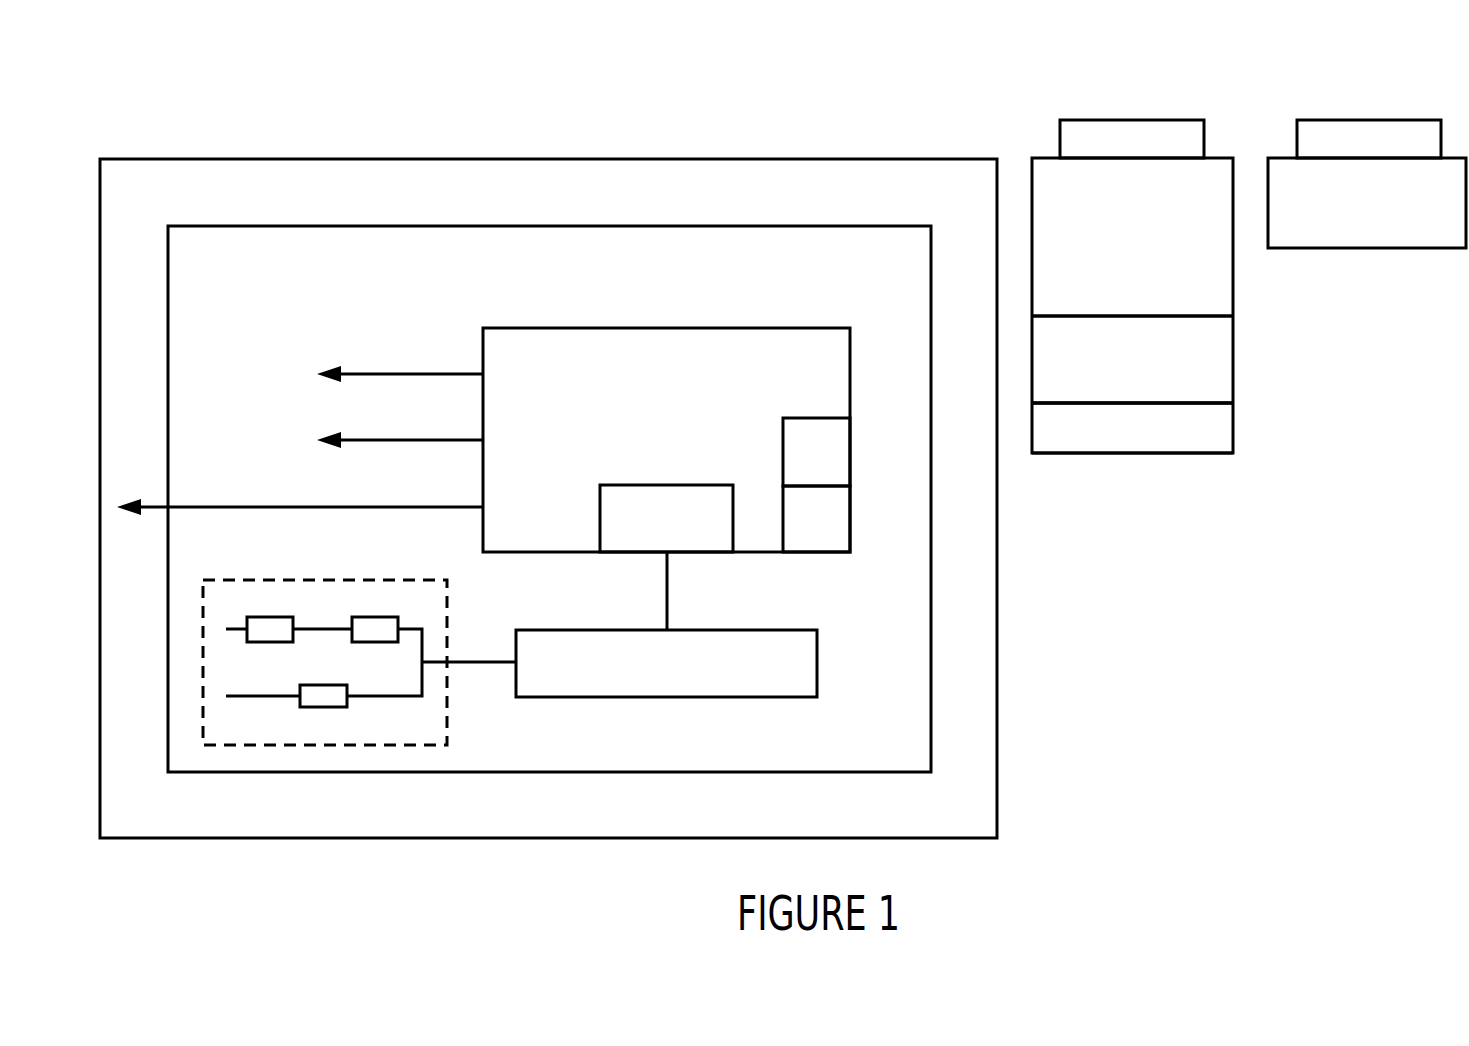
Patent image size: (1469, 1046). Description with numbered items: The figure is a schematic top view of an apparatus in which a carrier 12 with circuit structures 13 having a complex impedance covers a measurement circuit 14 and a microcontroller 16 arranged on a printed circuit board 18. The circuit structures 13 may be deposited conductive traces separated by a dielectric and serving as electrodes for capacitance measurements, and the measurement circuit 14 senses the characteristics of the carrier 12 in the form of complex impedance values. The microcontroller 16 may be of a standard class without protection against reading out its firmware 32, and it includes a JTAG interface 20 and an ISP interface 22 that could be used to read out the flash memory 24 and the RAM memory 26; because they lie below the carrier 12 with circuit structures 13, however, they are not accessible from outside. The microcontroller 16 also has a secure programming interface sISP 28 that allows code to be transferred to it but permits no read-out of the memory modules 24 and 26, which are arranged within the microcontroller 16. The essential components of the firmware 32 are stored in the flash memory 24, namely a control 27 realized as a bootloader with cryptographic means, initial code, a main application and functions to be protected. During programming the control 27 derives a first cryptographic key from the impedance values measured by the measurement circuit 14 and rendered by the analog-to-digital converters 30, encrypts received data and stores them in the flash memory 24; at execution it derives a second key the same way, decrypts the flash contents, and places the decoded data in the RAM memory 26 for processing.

The carrier 12 is at (508, 225).
The circuit structures 13 is at (448, 724).
The measurement circuit 14 is at (818, 660).
The microcontroller 16 is at (718, 308).
The printed circuit board 18 is at (372, 158).
The JTAG interface 20 is at (394, 372).
The ISP interface 22 is at (394, 442).
The flash memory 24 is at (831, 453).
The RAM memory 26 is at (831, 521).
The control 27 is at (1234, 361).
The secure programming interface sISP 28 is at (147, 505).
The analog-to-digital converters 30 is at (665, 484).
The firmware 32 is at (1234, 428).